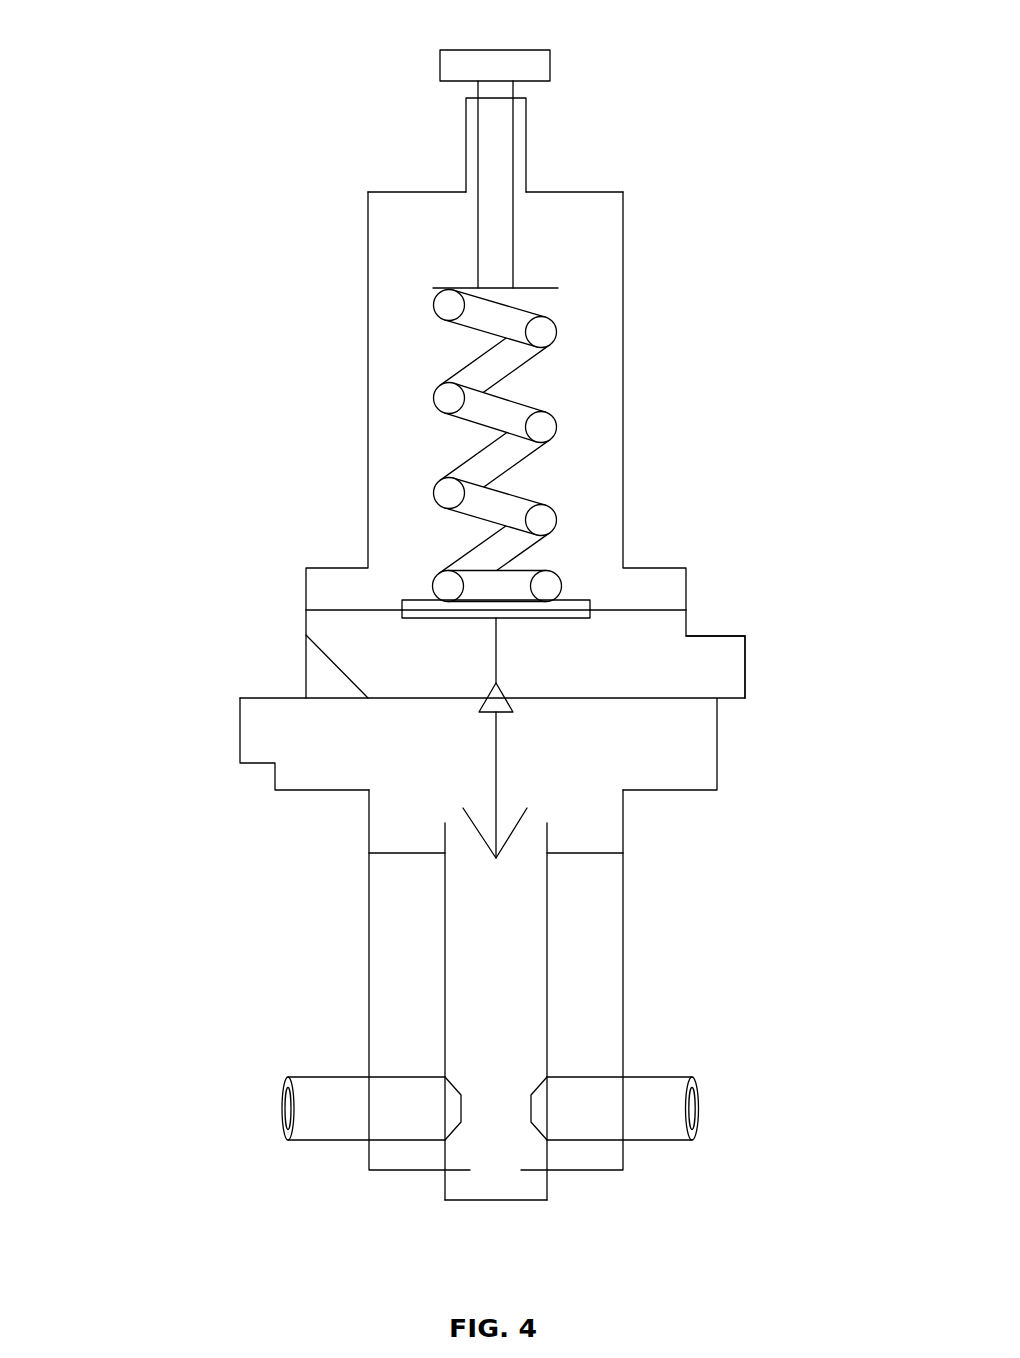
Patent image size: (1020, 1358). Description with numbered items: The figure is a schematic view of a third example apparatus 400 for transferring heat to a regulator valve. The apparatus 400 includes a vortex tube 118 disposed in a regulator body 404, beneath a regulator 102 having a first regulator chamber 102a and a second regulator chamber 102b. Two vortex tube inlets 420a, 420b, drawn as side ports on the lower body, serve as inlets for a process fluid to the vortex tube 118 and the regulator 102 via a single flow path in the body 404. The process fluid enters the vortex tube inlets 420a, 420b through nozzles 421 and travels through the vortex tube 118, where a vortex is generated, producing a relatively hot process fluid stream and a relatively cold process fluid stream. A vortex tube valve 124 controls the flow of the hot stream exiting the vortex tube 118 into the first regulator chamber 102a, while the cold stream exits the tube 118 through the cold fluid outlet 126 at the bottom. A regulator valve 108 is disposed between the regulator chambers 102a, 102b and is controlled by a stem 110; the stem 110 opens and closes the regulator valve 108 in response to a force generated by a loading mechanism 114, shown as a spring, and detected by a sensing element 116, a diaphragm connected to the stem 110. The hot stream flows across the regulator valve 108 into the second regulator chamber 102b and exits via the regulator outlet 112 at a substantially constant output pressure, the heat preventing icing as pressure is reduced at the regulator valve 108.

The third example apparatus 400 is at (218, 42).
The regulator 102 is at (109, 192).
The first regulator chamber 102a is at (248, 731).
The second regulator chamber 102b is at (735, 653).
The regulator body 404 is at (367, 192).
The loading mechanism 114 is at (592, 287).
The sensing element 116 is at (567, 598).
The regulator outlet 112 is at (745, 667).
The stem 110 is at (496, 640).
The regulator valve 108 is at (513, 706).
The vortex tube valve 124 is at (540, 818).
The vortex tube 118 is at (513, 1060).
The cold fluid outlet 126 is at (493, 1207).
The vortex tube inlet 420a is at (283, 1082).
The vortex tube inlet 420b is at (697, 1082).
The nozzles 421 is at (283, 1122).